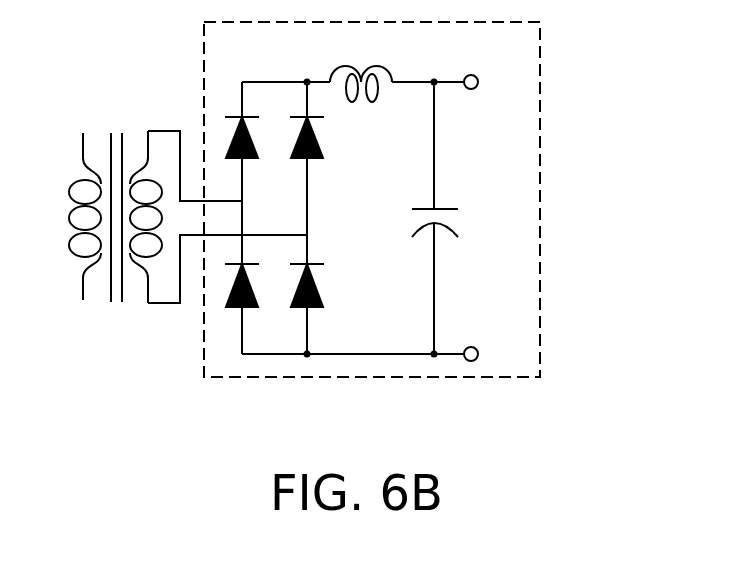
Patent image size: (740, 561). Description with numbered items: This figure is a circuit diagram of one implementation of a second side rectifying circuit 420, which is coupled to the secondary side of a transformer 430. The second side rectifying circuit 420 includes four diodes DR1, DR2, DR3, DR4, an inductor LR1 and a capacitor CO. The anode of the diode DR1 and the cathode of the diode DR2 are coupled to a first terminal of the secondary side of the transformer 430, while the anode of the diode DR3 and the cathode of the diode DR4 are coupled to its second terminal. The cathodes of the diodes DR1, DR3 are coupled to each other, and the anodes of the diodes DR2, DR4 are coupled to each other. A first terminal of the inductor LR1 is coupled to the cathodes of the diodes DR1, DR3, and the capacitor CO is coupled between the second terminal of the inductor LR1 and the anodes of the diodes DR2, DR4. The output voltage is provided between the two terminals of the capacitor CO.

The second side rectifying circuit 420 is at (427, 199).
The transformer 430 is at (117, 311).
The inductor LR1 is at (361, 65).
The diode DR1 is at (256, 141).
The diode DR2 is at (259, 277).
The diode DR3 is at (324, 158).
The diode DR4 is at (325, 294).
The capacitor CO is at (443, 218).